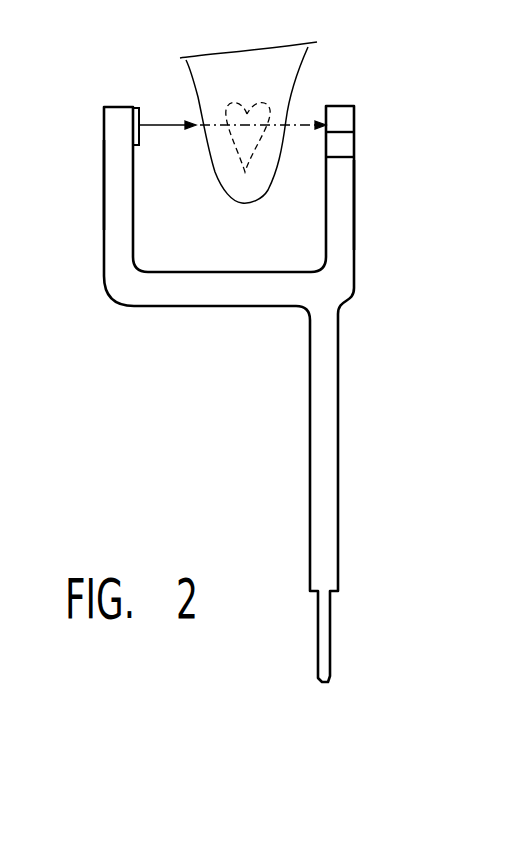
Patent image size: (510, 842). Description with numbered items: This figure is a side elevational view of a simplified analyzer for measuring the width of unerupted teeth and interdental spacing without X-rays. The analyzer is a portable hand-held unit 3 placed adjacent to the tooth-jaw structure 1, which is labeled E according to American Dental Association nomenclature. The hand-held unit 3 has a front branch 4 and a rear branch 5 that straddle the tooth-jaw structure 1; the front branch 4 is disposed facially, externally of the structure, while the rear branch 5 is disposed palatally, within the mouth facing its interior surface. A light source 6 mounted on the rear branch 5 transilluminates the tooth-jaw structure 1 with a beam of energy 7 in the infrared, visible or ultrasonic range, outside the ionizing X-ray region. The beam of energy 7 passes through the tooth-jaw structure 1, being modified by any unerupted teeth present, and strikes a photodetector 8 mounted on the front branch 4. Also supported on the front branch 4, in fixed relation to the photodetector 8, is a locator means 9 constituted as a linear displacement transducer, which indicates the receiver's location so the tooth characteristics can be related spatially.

The tooth-jaw structure 1 is at (292, 73).
The portable hand-held unit 3 is at (346, 361).
The front branch 4 is at (347, 193).
The rear branch 5 is at (108, 176).
The light source 6 is at (137, 118).
The beam of energy 7 is at (150, 127).
The photodetector 8 is at (348, 118).
The locator means 9 is at (347, 148).